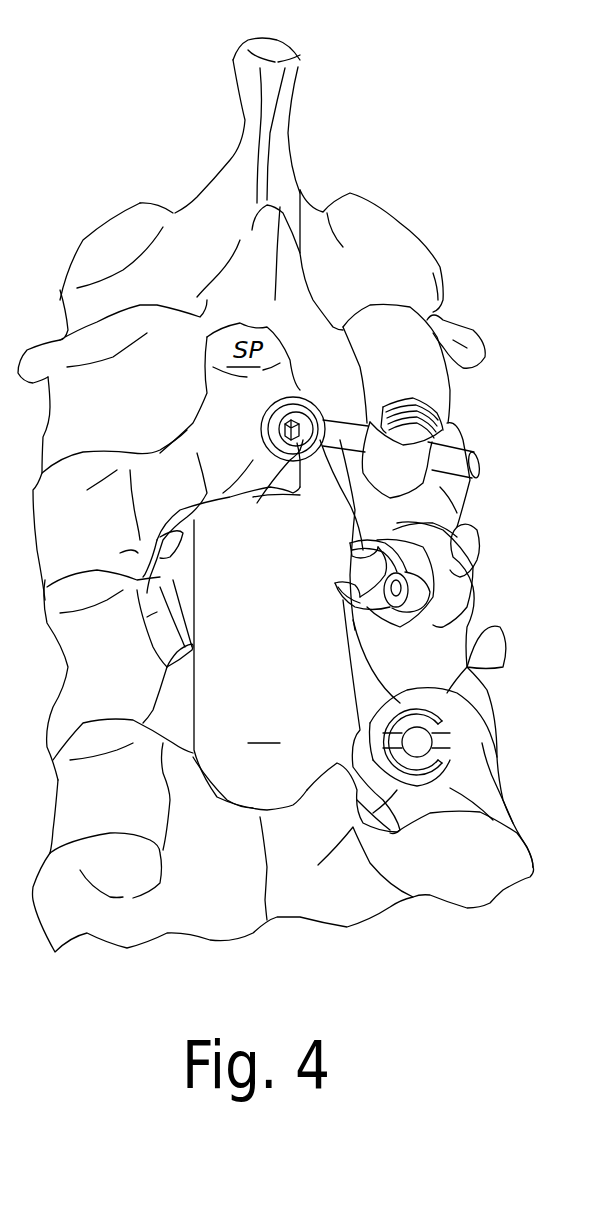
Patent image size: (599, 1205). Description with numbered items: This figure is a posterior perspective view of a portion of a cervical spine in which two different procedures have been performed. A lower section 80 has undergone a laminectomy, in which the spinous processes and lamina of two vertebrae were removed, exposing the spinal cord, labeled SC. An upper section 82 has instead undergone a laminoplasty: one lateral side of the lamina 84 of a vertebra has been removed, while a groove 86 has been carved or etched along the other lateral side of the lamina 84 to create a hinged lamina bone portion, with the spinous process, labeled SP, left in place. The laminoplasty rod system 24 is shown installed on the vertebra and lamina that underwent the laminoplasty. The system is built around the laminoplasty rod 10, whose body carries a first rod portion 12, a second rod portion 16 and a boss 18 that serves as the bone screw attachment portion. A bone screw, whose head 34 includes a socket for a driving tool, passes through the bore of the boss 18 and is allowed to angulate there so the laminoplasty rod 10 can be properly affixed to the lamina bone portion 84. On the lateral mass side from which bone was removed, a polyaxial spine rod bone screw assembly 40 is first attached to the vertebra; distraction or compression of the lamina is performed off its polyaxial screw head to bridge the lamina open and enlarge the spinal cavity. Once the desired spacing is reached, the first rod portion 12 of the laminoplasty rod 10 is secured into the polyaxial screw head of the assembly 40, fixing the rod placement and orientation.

The laminoplasty rod 10 is at (333, 405).
The first rod portion 12 is at (470, 457).
The second rod portion 16 is at (300, 450).
The boss 18 is at (270, 407).
The laminoplasty rod system 24 is at (325, 298).
The head 34 is at (228, 491).
The polyaxial spine rod bone screw assembly 40 is at (420, 392).
The section 80 is at (226, 818).
The section 82 is at (253, 543).
The lamina 84 is at (197, 450).
The groove 86 is at (130, 513).